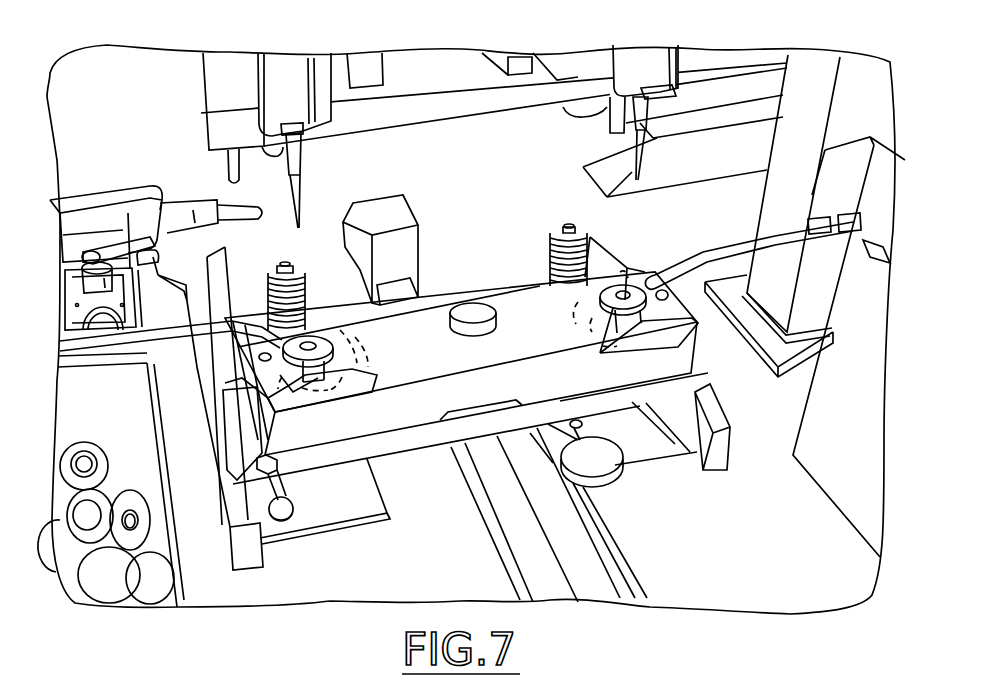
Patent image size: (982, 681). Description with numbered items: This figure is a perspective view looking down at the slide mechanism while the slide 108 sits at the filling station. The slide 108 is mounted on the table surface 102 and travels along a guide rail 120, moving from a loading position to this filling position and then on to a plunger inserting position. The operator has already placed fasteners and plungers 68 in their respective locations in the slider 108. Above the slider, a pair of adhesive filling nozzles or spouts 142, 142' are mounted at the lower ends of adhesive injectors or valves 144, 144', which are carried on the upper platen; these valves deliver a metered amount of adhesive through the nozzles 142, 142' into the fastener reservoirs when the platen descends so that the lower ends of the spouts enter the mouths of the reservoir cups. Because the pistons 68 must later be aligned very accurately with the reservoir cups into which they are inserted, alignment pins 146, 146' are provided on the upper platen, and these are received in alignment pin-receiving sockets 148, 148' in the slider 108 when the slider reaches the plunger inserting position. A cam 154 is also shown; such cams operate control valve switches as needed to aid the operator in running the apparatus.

The table surface 102 is at (820, 577).
The slide 108 is at (500, 395).
The guide rail 120 is at (517, 550).
The adhesive filling nozzle 142 is at (343, 180).
The adhesive filling nozzle 142' is at (566, 143).
The adhesive injector 144 is at (340, 74).
The adhesive injector 144' is at (699, 58).
The alignment pin 146 is at (167, 155).
The alignment pin 146' is at (557, 125).
The alignment pin-receiving socket 148 is at (171, 365).
The alignment pin-receiving socket 148' is at (753, 247).
The cam 154 is at (84, 280).
The plunger 68 is at (286, 268).